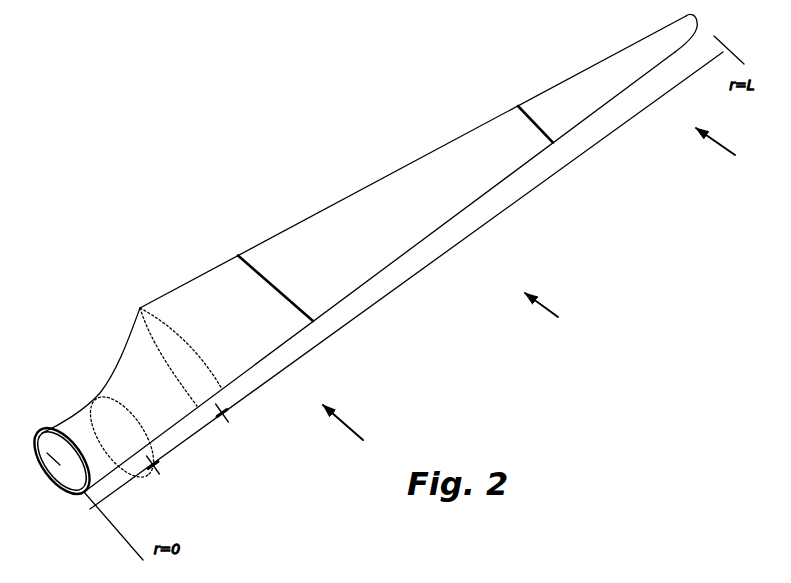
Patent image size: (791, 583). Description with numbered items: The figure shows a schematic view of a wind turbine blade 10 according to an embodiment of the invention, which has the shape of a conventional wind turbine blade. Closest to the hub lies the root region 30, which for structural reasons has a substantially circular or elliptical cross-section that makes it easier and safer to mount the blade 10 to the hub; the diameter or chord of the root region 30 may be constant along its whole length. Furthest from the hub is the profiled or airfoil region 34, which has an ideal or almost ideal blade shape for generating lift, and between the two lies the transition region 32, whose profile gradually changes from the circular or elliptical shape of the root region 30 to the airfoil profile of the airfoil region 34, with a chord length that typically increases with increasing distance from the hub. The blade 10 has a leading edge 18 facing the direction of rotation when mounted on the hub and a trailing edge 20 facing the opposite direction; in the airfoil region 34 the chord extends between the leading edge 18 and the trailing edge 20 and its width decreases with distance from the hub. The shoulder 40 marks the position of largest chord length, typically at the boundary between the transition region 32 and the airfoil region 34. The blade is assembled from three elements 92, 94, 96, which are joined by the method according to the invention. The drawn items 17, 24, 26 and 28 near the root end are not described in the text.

The wind turbine blade 10 is at (245, 168).
The root end / hub connection 17 is at (37, 462).
The leading edge 18 is at (497, 183).
The trailing edge 20 is at (407, 163).
The root section 24 is at (72, 418).
The root flange bore 26 is at (51, 486).
The root flange 28 is at (49, 430).
The root region 30 is at (120, 488).
The transition region 32 is at (193, 436).
The airfoil region 34 is at (420, 270).
The shoulder 40 is at (140, 308).
The blade element 92 is at (358, 433).
The blade element 94 is at (557, 315).
The blade element 96 is at (734, 154).